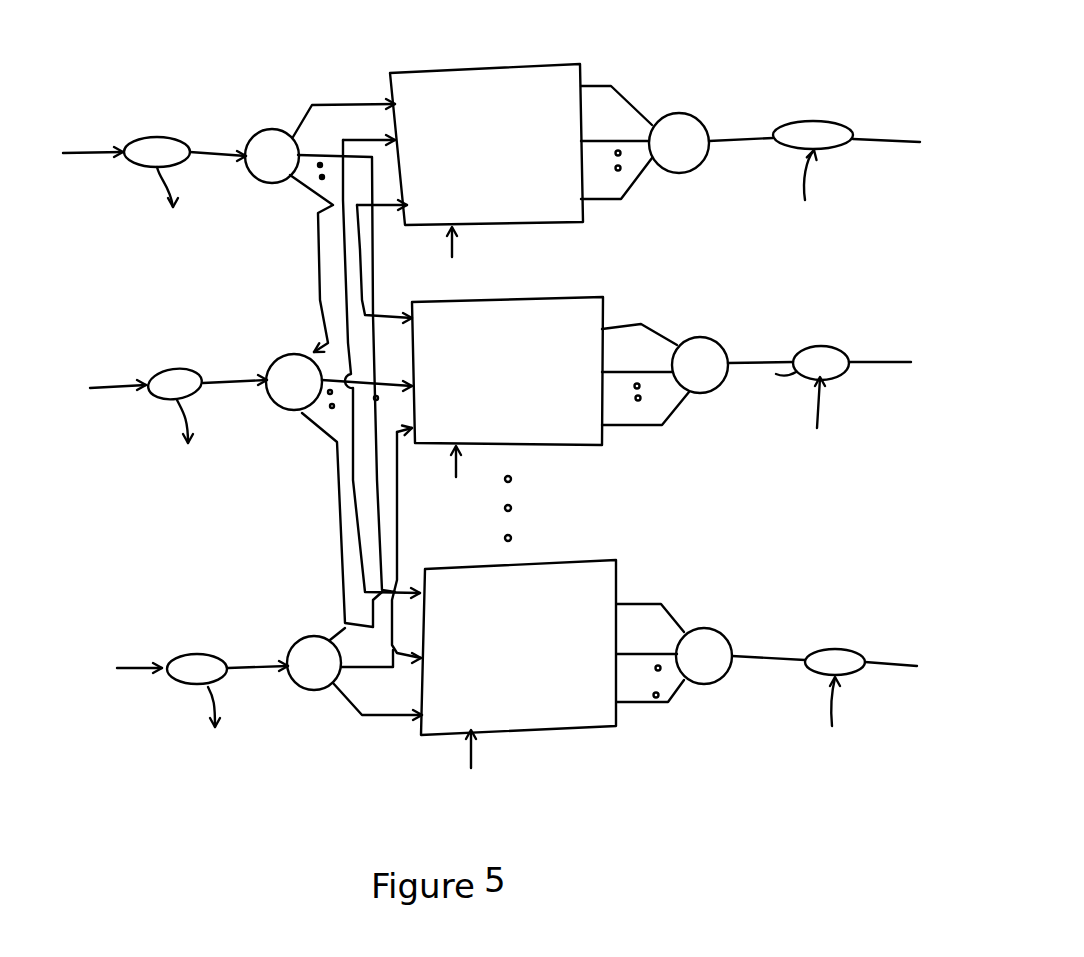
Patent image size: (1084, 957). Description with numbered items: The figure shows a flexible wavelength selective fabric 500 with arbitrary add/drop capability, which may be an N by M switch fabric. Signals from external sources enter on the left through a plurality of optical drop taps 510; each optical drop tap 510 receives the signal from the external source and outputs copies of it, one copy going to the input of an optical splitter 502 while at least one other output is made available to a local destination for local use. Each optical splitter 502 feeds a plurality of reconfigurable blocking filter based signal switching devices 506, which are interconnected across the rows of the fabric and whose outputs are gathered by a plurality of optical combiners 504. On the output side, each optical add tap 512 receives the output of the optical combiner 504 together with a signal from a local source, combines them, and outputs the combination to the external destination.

The flexible wavelength selective fabric 500 is at (509, 416).
The optical splitter 502 is at (270, 129).
The optical combiner 504 is at (695, 113).
The signal switching device 506 is at (478, 72).
The optical drop tap 510 is at (155, 128).
The optical add tap 512 is at (821, 115).